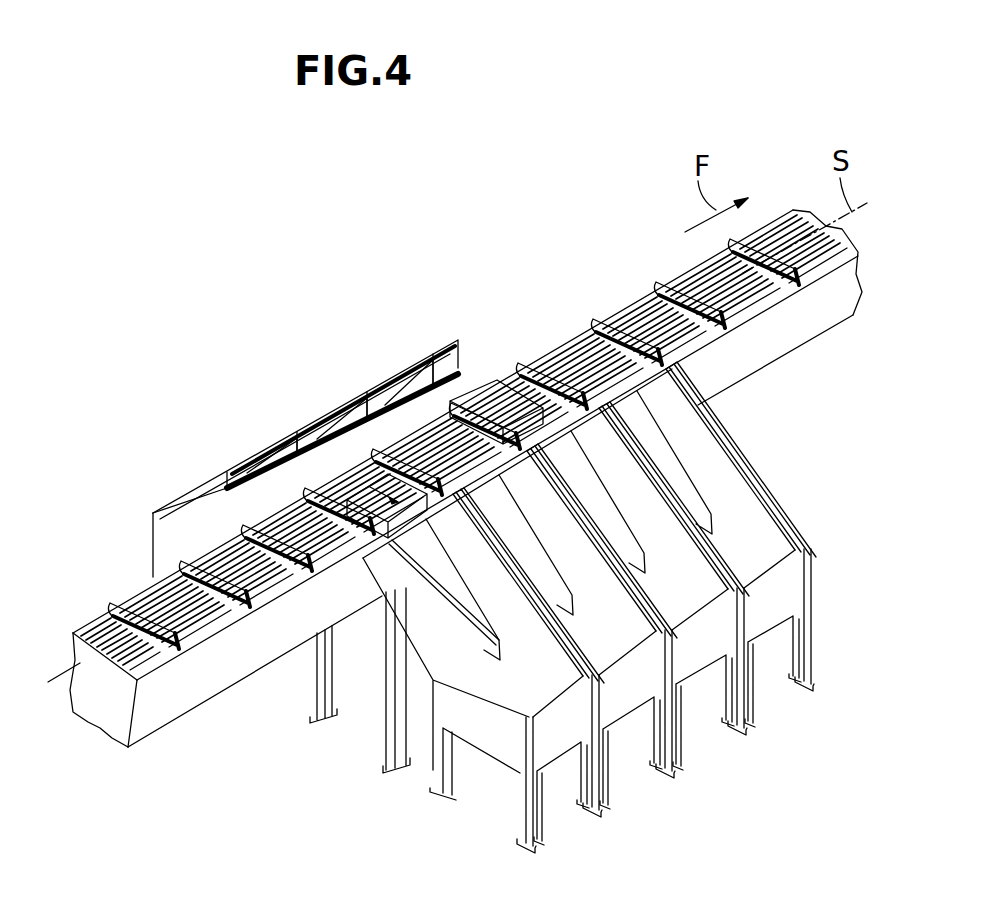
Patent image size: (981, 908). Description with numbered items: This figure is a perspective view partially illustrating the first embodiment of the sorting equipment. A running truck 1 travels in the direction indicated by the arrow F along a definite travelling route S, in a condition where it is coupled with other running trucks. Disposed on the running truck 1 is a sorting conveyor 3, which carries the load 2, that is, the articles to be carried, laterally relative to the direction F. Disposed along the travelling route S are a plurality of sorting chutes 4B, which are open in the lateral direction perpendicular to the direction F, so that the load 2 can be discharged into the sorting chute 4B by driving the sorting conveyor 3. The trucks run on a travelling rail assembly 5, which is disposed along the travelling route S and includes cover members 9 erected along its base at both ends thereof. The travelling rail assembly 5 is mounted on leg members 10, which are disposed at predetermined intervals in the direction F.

The running truck 1 is at (660, 277).
The load 2 is at (507, 397).
The sorting conveyor 3 is at (733, 300).
The sorting chute 4B is at (793, 580).
The travelling rail assembly 5 is at (192, 687).
The cover members 9 is at (233, 670).
The leg members 10 is at (333, 673).